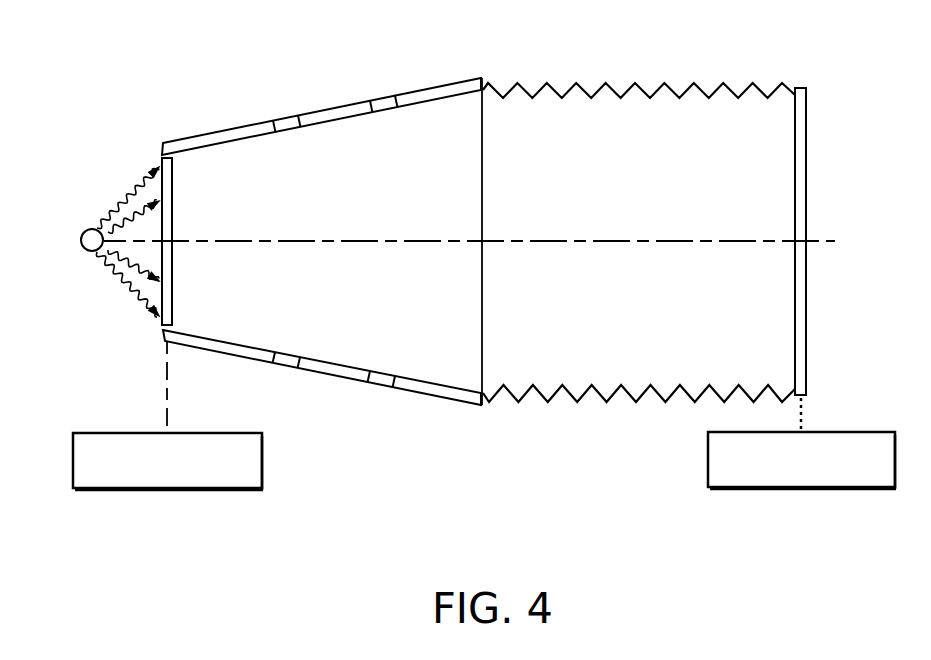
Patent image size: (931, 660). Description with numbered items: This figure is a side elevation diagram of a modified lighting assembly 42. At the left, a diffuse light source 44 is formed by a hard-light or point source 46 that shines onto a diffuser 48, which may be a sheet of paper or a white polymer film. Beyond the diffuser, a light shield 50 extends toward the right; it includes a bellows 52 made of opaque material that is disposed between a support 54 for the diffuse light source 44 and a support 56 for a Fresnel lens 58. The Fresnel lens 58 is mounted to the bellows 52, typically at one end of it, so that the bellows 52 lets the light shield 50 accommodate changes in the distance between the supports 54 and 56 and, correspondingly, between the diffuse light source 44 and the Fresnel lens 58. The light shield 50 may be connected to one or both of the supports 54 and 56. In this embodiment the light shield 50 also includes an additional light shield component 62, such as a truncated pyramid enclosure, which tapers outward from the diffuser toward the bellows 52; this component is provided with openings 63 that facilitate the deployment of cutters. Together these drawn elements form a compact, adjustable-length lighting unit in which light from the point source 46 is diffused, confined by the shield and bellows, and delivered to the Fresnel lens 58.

The modified lighting assembly 42 is at (284, 76).
The diffuse light source 44 is at (114, 161).
The point source 46 is at (86, 250).
The diffuser 48 is at (172, 283).
The light shield 50 is at (337, 383).
The bellows 52 is at (606, 404).
The support 54 is at (168, 490).
The support 56 is at (800, 489).
The Fresnel lens 58 is at (807, 328).
The additional light shield component 62 is at (453, 406).
The openings 63 is at (287, 357).